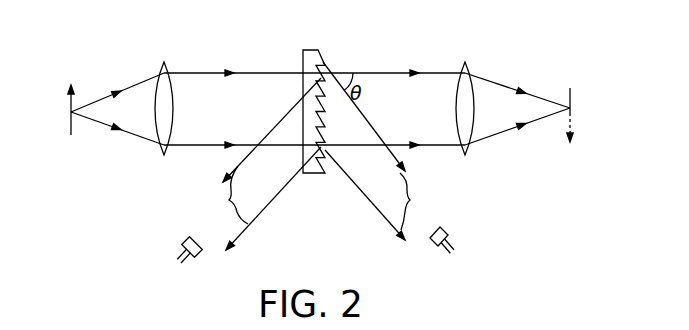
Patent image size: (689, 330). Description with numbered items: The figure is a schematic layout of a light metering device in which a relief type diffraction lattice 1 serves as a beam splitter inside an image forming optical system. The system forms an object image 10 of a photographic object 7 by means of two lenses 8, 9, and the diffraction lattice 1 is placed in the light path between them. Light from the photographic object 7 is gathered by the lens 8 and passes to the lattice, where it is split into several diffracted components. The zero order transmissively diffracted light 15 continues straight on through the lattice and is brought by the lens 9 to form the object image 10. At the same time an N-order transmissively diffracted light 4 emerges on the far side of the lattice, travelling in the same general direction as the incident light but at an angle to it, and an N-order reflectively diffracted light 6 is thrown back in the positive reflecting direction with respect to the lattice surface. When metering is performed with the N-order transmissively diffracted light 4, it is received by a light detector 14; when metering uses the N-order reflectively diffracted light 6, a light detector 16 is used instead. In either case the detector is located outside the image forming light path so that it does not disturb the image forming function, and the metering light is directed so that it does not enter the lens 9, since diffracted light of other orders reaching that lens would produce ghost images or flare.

The diffraction lattice 1 is at (315, 50).
The N-order transmissively diffracted light 4 is at (374, 151).
The N-order reflectively diffracted light 6 is at (267, 164).
The photographic object 7 is at (69, 125).
The lens 8 is at (166, 63).
The lens 9 is at (468, 63).
The object image 10 is at (571, 88).
The light detector 14 is at (448, 226).
The zero order transmissively diffracted light 15 is at (415, 71).
The light detector 16 is at (190, 237).